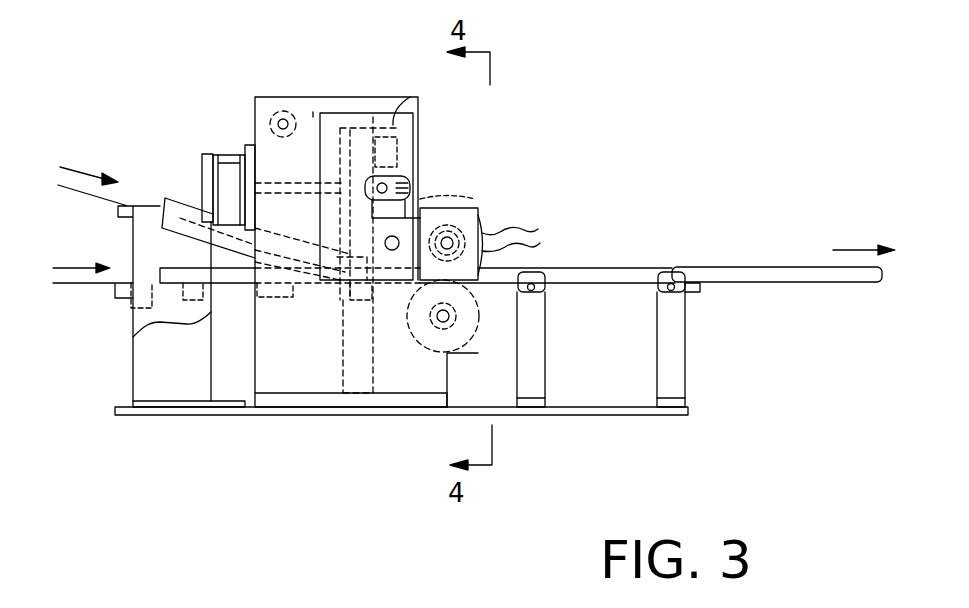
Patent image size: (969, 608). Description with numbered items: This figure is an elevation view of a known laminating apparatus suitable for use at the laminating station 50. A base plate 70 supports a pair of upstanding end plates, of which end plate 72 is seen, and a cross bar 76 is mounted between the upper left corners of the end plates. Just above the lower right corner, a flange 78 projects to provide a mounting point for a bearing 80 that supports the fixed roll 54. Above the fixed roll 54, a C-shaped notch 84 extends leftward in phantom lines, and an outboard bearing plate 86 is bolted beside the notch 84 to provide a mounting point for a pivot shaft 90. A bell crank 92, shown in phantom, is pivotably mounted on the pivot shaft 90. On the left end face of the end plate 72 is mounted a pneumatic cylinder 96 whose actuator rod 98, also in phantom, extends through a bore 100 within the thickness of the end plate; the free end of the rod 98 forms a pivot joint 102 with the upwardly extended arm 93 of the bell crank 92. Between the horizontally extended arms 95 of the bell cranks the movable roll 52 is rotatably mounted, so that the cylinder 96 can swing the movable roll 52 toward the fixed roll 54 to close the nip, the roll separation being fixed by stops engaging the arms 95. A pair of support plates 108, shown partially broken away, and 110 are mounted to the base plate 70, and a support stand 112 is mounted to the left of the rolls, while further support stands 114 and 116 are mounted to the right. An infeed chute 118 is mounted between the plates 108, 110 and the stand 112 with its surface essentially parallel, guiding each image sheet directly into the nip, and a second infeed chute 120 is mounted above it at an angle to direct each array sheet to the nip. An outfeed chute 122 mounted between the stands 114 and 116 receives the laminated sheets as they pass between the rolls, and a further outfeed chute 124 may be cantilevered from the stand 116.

The station 50 is at (218, 98).
The movable roll 52 is at (515, 222).
The fixed roll 54 is at (483, 313).
The base plate 70 is at (572, 411).
The end plate 72 is at (252, 372).
The cross bar 76 is at (279, 100).
The flange 78 is at (465, 381).
The bearing 80 is at (437, 325).
The C-shaped notch 84 is at (375, 127).
The outboard bearing plate 86 is at (408, 98).
The pivot shaft 90 is at (478, 218).
The bell crank 92 is at (483, 199).
The upwardly extended arm 93 is at (390, 154).
The horizontally extended arm 95 is at (525, 233).
The pneumatic cylinder 96 is at (216, 156).
The actuator rod 98 is at (340, 128).
The bore 100 is at (313, 112).
The pivot joint 102 is at (425, 178).
The support plate 108 is at (155, 360).
The support plate 110 is at (143, 245).
The support stand 112 is at (355, 355).
The support stand 114 is at (537, 340).
The support stand 116 is at (673, 363).
The infeed chute 118 is at (130, 290).
The infeed chute 120 is at (172, 200).
The outfeed chute 122 is at (620, 270).
The further outfeed chute 124 is at (740, 272).